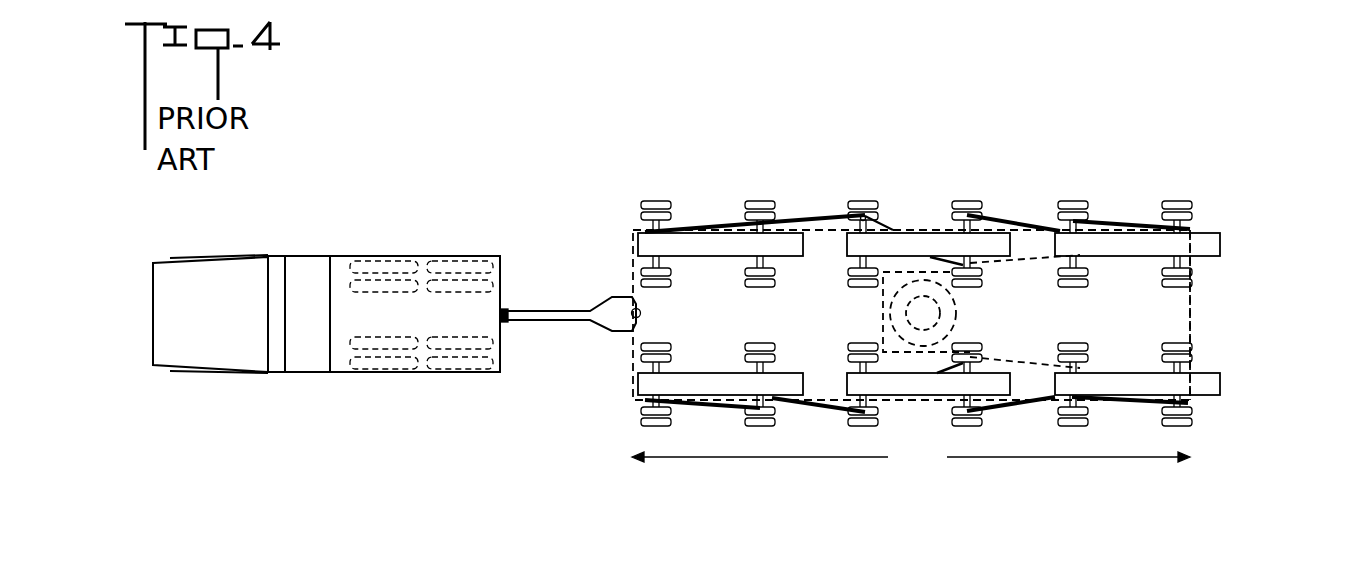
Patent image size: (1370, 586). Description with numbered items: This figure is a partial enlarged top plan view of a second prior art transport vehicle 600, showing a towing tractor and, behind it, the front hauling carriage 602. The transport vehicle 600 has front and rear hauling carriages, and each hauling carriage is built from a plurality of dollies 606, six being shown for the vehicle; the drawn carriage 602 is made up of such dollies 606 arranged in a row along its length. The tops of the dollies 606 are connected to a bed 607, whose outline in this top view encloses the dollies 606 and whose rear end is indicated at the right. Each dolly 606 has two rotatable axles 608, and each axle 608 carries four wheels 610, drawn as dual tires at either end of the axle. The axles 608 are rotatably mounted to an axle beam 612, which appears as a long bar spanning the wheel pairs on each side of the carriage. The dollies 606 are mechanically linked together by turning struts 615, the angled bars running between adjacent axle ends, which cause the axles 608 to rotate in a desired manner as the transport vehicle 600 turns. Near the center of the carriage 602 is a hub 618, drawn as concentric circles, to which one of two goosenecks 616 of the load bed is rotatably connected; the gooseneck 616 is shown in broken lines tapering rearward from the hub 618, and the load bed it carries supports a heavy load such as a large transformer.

The transport vehicle 600 is at (602, 170).
The front hauling carriage 602 is at (911, 458).
The dolly 606 is at (708, 214).
The bed 607 is at (1192, 328).
The rotatable axle 608 is at (640, 280).
The wheel 610 is at (640, 220).
The axle beam 612 is at (682, 245).
The turning strut 615 is at (804, 228).
The gooseneck 616 is at (1028, 262).
The hub 618 is at (917, 305).